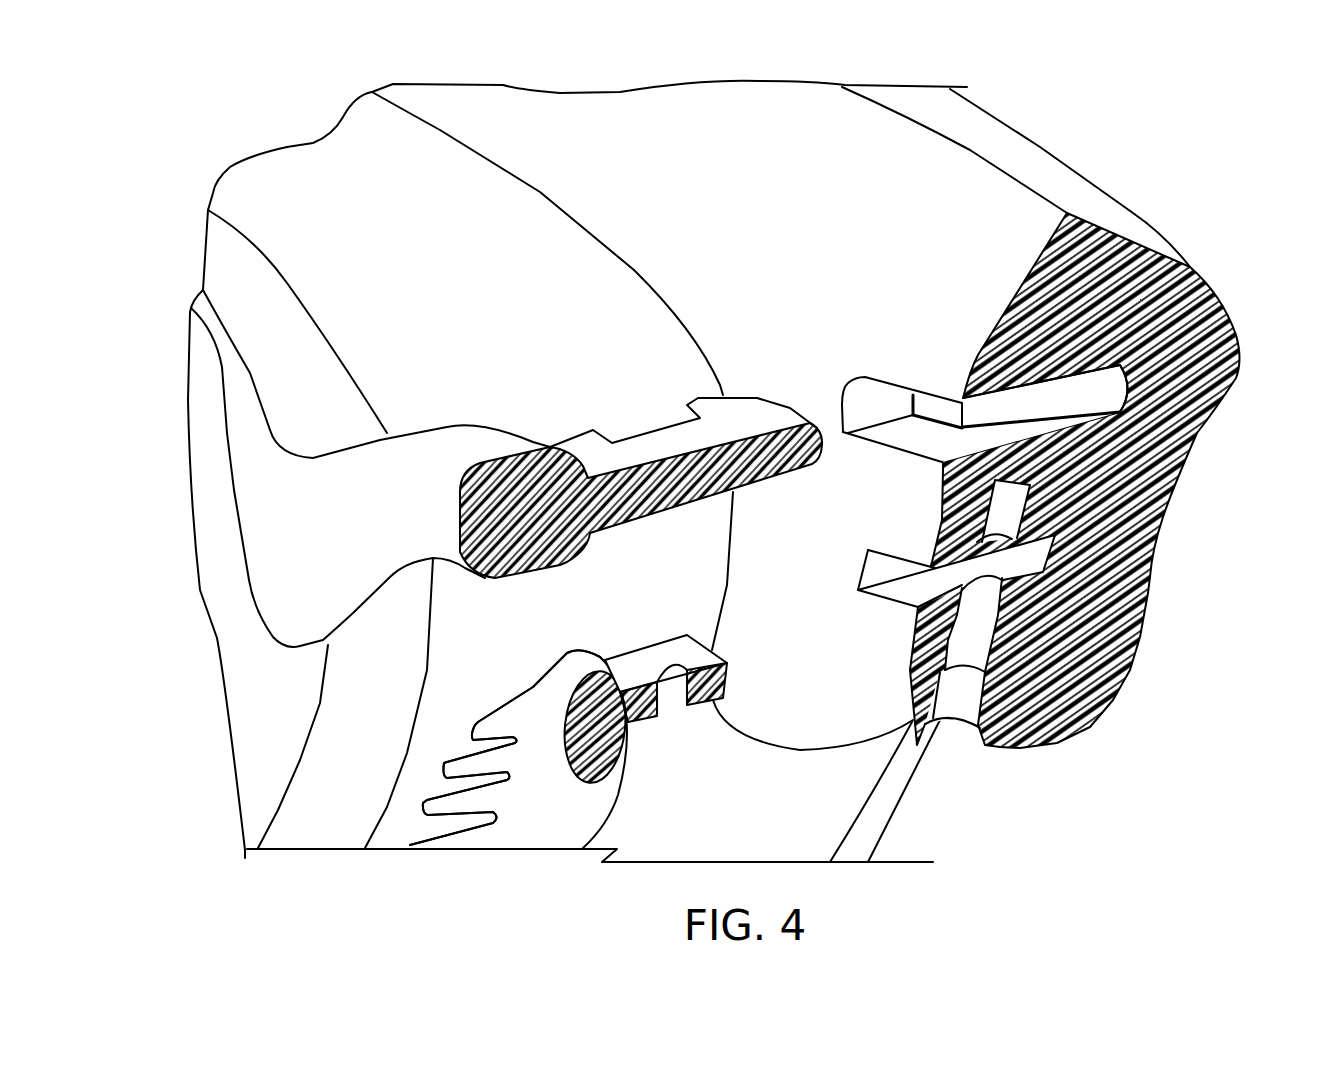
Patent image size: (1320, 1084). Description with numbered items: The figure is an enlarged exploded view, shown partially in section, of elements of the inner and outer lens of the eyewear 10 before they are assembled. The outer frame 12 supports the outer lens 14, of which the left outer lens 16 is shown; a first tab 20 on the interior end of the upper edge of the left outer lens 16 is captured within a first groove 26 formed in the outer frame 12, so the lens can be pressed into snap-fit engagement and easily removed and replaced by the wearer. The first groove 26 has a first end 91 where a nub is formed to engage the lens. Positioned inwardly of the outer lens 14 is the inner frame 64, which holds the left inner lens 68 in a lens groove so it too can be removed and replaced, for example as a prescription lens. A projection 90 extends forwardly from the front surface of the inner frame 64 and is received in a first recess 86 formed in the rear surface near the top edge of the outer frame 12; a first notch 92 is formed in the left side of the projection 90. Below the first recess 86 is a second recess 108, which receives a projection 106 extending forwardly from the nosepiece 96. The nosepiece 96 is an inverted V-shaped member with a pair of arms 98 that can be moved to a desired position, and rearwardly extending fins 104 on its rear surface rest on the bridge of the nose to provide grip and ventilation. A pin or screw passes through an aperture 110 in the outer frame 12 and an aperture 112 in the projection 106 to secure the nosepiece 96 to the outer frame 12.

The eyewear 10 is at (1083, 165).
The outer frame 12 is at (1003, 128).
The outer lens 14 is at (926, 794).
The left outer lens 16 is at (777, 819).
The first tab 20 is at (937, 405).
The first groove 26 is at (915, 408).
The inner frame 64 is at (333, 527).
The left inner lens 68 is at (255, 716).
The first recess 86 is at (970, 405).
The projection 90 is at (641, 463).
The first end 91 is at (1005, 415).
The first notch 92 is at (641, 432).
The nosepiece 96 is at (527, 692).
The arms 98 is at (486, 749).
The fins 104 is at (427, 805).
The projection 106 is at (643, 693).
The second recess 108 is at (898, 593).
The aperture 110 is at (964, 640).
The aperture 112 is at (672, 697).